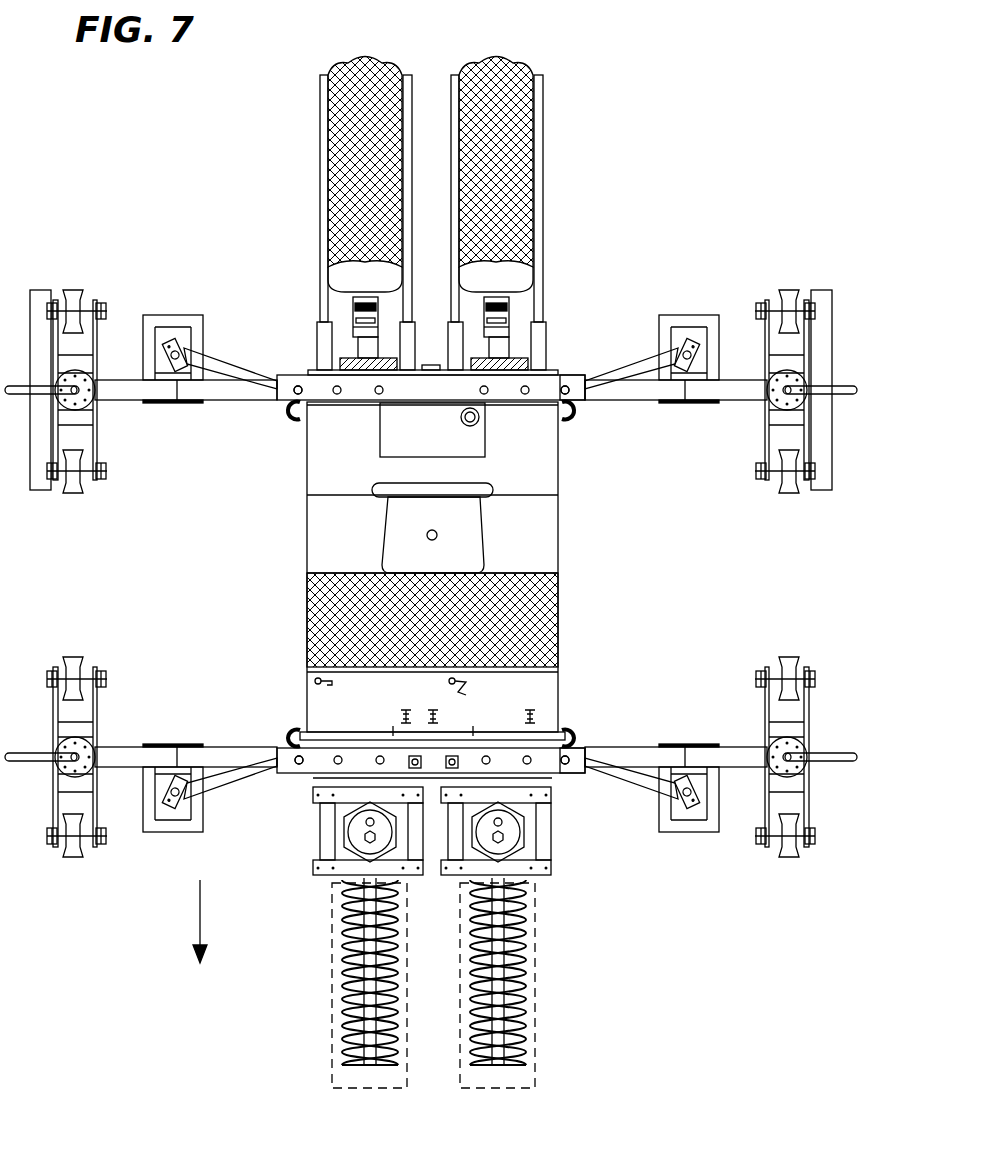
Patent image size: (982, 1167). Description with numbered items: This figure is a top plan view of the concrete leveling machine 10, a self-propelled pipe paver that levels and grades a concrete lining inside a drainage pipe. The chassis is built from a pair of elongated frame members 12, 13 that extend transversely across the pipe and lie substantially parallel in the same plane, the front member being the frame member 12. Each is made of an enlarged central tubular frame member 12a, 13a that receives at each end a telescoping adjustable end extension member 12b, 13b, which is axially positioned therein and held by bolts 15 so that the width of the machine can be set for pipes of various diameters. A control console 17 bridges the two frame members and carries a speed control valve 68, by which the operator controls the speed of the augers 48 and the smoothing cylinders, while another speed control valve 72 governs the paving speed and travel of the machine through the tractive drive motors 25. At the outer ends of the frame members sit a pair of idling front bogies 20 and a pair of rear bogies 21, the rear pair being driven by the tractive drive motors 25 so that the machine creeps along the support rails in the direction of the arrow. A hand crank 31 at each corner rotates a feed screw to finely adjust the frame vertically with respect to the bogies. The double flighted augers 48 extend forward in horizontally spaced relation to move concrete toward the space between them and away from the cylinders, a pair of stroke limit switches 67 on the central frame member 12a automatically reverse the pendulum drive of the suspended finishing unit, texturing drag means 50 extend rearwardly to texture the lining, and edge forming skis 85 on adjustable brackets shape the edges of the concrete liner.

The concrete leveling machine 10 is at (593, 608).
The front elongated frame member 12 is at (278, 748).
The central enlarged tubular frame member 12a is at (581, 776).
The telescoping adjustable end extension member 12b is at (123, 750).
The rear elongated frame member 13 is at (278, 403).
The central enlarged tubular frame member 13a is at (578, 394).
The telescoping adjustable end extension member 13b is at (210, 392).
The bolts 15 is at (297, 385).
The control console 17 is at (560, 695).
The front bogies 20 is at (80, 654).
The rear bogies 21 is at (75, 493).
The tractive drive motors 25 is at (41, 300).
The hand crank 31 is at (42, 756).
The auger 48 is at (472, 931).
The texturing drag means 50 is at (358, 157).
The stroke limit switches 67 is at (409, 762).
The speed control valve 68 is at (458, 698).
The speed control valve 72 is at (317, 690).
The edge forming ski 85 is at (678, 330).